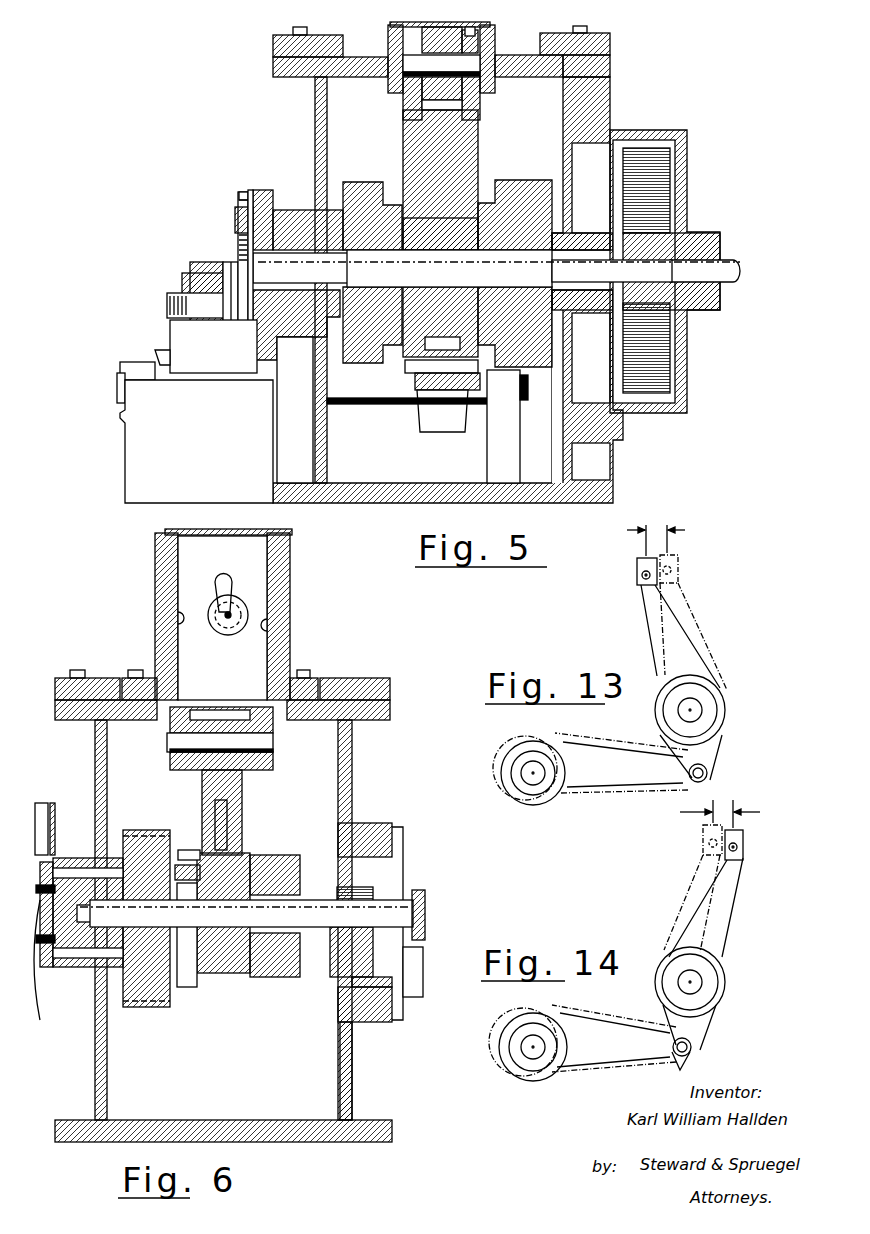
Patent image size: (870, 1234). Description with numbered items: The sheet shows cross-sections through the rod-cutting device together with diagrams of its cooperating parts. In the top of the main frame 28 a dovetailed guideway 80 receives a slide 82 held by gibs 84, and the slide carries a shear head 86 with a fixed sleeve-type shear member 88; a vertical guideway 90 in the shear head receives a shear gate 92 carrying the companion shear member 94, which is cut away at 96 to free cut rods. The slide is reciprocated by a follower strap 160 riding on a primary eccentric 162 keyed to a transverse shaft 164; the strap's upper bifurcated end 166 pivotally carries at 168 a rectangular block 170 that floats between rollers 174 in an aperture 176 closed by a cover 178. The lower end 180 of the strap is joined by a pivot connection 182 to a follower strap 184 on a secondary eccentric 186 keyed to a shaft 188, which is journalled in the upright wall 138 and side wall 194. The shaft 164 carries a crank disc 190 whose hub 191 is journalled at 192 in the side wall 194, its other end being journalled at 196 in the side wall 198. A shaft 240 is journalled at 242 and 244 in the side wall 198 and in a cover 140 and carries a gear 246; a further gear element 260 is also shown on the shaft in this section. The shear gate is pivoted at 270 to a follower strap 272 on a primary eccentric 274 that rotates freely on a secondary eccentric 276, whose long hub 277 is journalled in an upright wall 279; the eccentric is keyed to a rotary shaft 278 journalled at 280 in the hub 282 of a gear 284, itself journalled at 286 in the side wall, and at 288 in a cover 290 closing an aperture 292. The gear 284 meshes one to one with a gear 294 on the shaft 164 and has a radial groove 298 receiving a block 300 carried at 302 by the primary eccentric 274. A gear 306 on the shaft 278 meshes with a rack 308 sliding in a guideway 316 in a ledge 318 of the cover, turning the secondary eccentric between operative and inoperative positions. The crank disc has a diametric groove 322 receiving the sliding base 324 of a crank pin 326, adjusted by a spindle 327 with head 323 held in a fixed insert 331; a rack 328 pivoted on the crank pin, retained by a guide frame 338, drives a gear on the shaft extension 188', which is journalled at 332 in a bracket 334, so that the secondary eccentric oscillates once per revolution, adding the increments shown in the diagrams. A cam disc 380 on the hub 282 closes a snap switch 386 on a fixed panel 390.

In FIG. 5, the main frame 28 is at (312, 128).
In FIG. 6, the main frame 28 is at (354, 785).
In FIG. 5, the longitudinal dovetailed guideway 80 is at (305, 78).
In FIG. 6, the longitudinal dovetailed guideway 80 is at (100, 712).
In FIG. 5, the slide 82 is at (508, 78).
In FIG. 6, the slide 82 is at (290, 728).
In FIG. 5, the gibs 84 is at (318, 36).
In FIG. 6, the gibs 84 is at (100, 680).
In FIG. 6, the shear head 86 is at (292, 640).
In FIG. 6, the fixed sleeve-type shear die 88 is at (218, 630).
In FIG. 6, the vertical guideway 90 is at (176, 618).
In FIG. 6, the shear gate 92 is at (265, 658).
In FIG. 6, the movable shear die 94 is at (246, 612).
In FIG. 6, the cut-away 96 is at (233, 588).
In FIG. 5, the upright wall 138 is at (521, 425).
In FIG. 5, the cover 140 is at (690, 178).
In FIG. 5, the follower strap 160 is at (470, 142).
In FIG. 13, the follower strap 160 is at (648, 628).
In FIG. 14, the follower strap 160 is at (725, 920).
In FIG. 5, the primary eccentric 162 is at (450, 232).
In FIG. 13, the primary eccentric 162 is at (655, 712).
In FIG. 14, the primary eccentric 162 is at (715, 980).
In FIG. 5, the transverse shaft 164 is at (422, 278).
In FIG. 13, the transverse shaft 164 is at (696, 706).
In FIG. 14, the transverse shaft 164 is at (680, 985).
In FIG. 5, the upper bifurcated end 166 is at (405, 95).
In FIG. 5, the pivot 168 is at (470, 63).
In FIG. 13, the rectangular block 170 is at (637, 570).
In FIG. 14, the rectangular block 170 is at (703, 835).
In FIG. 5, the rotary rollers 174 is at (472, 32).
In FIG. 5, the aperture 176 is at (445, 30).
In FIG. 5, the cover 178 is at (400, 25).
In FIG. 5, the lower end 180 is at (405, 380).
In FIG. 5, the pivot connection 182 is at (440, 388).
In FIG. 13, the pivot connection 182 is at (708, 776).
In FIG. 14, the pivot connection 182 is at (688, 1058).
In FIG. 5, the follower strap 184 is at (440, 432).
In FIG. 13, the follower strap 184 is at (590, 790).
In FIG. 14, the follower strap 184 is at (640, 1060).
In FIG. 13, the secondary eccentric 186 is at (545, 797).
In FIG. 14, the secondary eccentric 186 is at (502, 1048).
In FIG. 5, the shaft 188 is at (416, 415).
In FIG. 13, the shaft 188 is at (517, 789).
In FIG. 14, the shaft 188 is at (529, 1069).
In FIG. 5, the outward extension of shaft 188' is at (103, 393).
In FIG. 5, the crank disc 190 is at (262, 195).
In FIG. 5, the hub 191 is at (295, 240).
In FIG. 5, the journal 192 is at (302, 318).
In FIG. 5, the side wall 194 is at (312, 398).
In FIG. 5, the journal 196 is at (570, 240).
In FIG. 5, the side wall 198 is at (575, 188).
In FIG. 5, the shaft 240 is at (730, 265).
In FIG. 5, the journal 242 is at (580, 310).
In FIG. 5, the journal 244 is at (697, 242).
In FIG. 5, the gear 246 is at (660, 228).
In FIG. 5, the gear 260 is at (530, 186).
In FIG. 6, the pivot connection 270 is at (252, 745).
In FIG. 6, the follower strap 272 is at (244, 845).
In FIG. 6, the primary eccentric 274 is at (260, 858).
In FIG. 6, the secondary eccentric 276 is at (226, 975).
In FIG. 6, the hub 277 is at (285, 950).
In FIG. 6, the rotary shaft 278 is at (157, 920).
In FIG. 6, the upright wall 279 is at (348, 1030).
In FIG. 6, the journal 280 is at (100, 947).
In FIG. 6, the hub 282 is at (70, 985).
In FIG. 6, the gear 284 is at (150, 1008).
In FIG. 6, the journal 286 is at (80, 866).
In FIG. 6, the journal 288 is at (418, 892).
In FIG. 6, the cover 290 is at (404, 850).
In FIG. 6, the aperture 292 is at (370, 838).
In FIG. 5, the gear 294 is at (365, 186).
In FIG. 6, the radial groove 298 is at (184, 845).
In FIG. 6, the block 300 is at (190, 848).
In FIG. 6, the block mounting 302 is at (230, 812).
In FIG. 6, the gear 306 is at (350, 888).
In FIG. 6, the rack 308 is at (340, 945).
In FIG. 6, the guideway 316 is at (358, 980).
In FIG. 6, the inward ledge 318 is at (365, 990).
In FIG. 5, the diametric groove 322 is at (237, 243).
In FIG. 5, the head 323 is at (243, 192).
In FIG. 5, the sliding base 324 is at (229, 360).
In FIG. 5, the crank pin 326 is at (200, 266).
In FIG. 5, the adjustment spindle 327 is at (251, 360).
In FIG. 5, the rack 328 is at (213, 346).
In FIG. 5, the fixed insert 331 is at (236, 215).
In FIG. 5, the journal 332 is at (122, 368).
In FIG. 5, the bracket 334 is at (130, 450).
In FIG. 5, the guide frame 338 is at (160, 352).
In FIG. 6, the cam disc 380 is at (45, 968).
In FIG. 6, the snap switch 386 is at (40, 812).
In FIG. 6, the fixed panel 390 is at (53, 812).